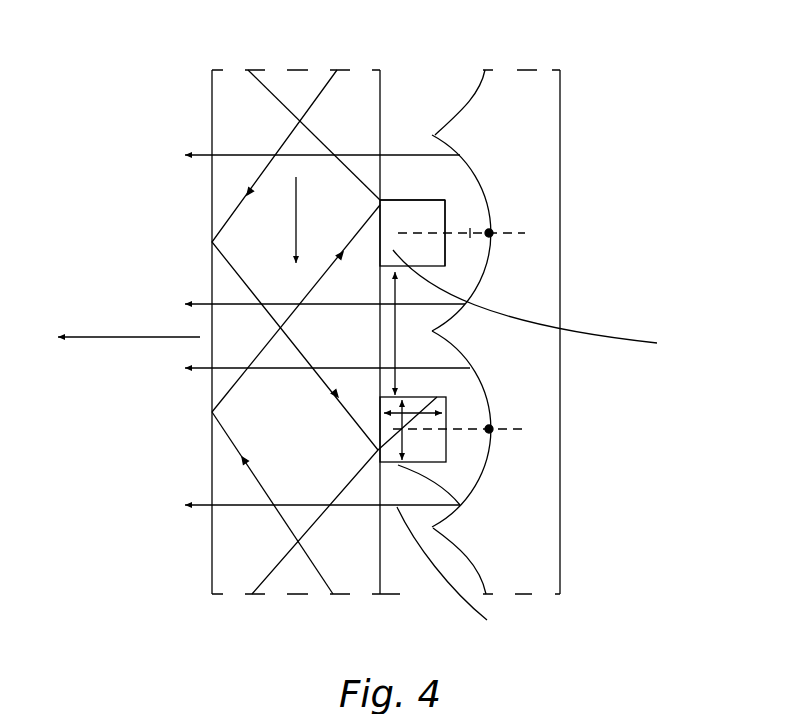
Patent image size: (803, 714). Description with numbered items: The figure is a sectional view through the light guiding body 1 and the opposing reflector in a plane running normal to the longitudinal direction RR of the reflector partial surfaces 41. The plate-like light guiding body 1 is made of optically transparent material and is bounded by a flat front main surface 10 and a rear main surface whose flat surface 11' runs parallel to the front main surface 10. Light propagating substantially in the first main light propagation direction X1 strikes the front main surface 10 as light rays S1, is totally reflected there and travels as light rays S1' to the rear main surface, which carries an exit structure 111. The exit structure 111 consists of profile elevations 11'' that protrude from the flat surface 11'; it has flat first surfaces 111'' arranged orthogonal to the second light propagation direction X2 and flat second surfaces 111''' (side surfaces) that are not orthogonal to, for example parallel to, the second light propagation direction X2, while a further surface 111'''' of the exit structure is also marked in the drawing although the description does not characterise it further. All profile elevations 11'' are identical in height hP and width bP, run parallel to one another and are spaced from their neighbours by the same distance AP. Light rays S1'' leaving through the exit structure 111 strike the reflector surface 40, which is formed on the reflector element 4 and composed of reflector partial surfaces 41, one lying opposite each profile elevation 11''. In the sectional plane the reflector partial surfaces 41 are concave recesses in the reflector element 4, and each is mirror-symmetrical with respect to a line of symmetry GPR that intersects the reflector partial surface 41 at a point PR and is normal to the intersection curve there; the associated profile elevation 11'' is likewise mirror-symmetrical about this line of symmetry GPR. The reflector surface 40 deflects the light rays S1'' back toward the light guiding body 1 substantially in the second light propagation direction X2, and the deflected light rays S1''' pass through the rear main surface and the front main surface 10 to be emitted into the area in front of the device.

The light guiding body 1 is at (365, 85).
The front main surface 10 is at (212, 462).
The flat surface 11' is at (439, 333).
The reflector element 4 is at (540, 95).
The reflector surface 40 is at (437, 136).
The reflector partial surfaces 41 is at (445, 208).
The profile elevations 11'' is at (563, 233).
The light ray portion 111'''' is at (534, 164).
The point PR is at (490, 233).
The line of symmetry GPR is at (470, 235).
The longitudinal direction RR is at (497, 435).
The flat first surfaces 111'' is at (549, 252).
The flat second surfaces 111''' is at (550, 401).
The exit structure 111 is at (551, 304).
The distance AP is at (433, 331).
The width bP is at (446, 462).
The height hP is at (445, 441).
The first main light propagation direction X1 is at (294, 220).
The second light propagation direction X2 is at (121, 356).
The light rays S1 is at (287, 287).
The light rays S1' is at (239, 332).
The light rays S1'' is at (515, 534).
The deflected light rays S1''' is at (472, 573).